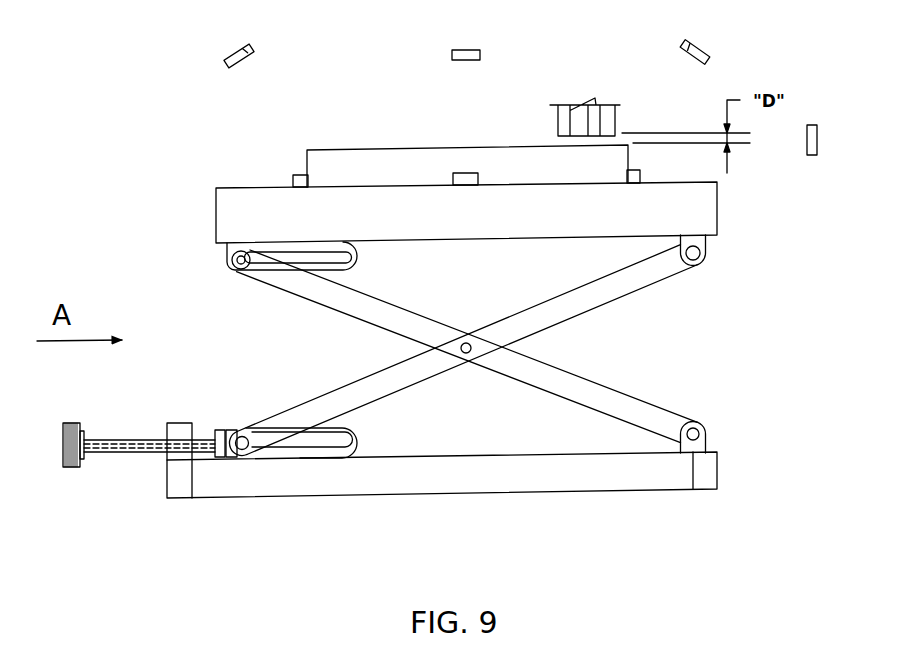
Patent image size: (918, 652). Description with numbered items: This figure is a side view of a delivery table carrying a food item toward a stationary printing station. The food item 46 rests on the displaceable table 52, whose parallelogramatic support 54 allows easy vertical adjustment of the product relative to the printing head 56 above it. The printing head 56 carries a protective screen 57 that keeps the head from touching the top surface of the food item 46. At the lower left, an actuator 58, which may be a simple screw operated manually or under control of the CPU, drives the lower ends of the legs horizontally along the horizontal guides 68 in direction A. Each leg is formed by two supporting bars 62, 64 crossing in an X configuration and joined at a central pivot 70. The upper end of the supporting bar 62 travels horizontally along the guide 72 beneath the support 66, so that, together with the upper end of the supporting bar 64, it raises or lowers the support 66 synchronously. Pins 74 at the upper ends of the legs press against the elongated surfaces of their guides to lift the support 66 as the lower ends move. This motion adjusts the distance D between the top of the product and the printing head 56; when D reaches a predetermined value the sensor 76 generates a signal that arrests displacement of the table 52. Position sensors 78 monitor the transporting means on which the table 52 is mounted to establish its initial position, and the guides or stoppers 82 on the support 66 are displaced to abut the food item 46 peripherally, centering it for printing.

The food item 46 is at (325, 163).
The displaceable table 52 is at (200, 162).
The parallelogramatic support 54 is at (701, 351).
The printing head 56 is at (607, 113).
The protective screen 57 is at (562, 141).
The actuator 58 is at (120, 448).
The supporting bar 62 is at (422, 332).
The supporting bar 64 is at (573, 302).
The support 66 is at (240, 218).
The horizontal guide 68 is at (310, 440).
The central pivot 70 is at (465, 342).
The guide 72 is at (302, 259).
The pin 74 is at (235, 268).
The sensor 76 is at (240, 457).
The position sensor 78 is at (248, 49).
The guides or stoppers 82 is at (302, 180).